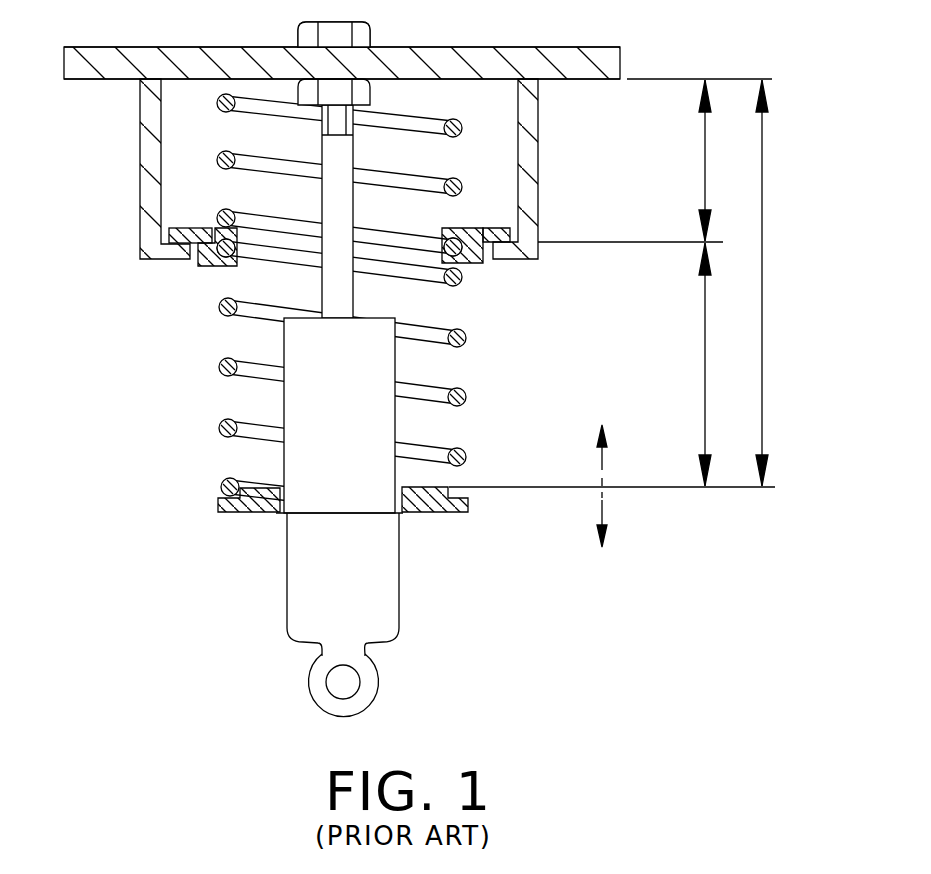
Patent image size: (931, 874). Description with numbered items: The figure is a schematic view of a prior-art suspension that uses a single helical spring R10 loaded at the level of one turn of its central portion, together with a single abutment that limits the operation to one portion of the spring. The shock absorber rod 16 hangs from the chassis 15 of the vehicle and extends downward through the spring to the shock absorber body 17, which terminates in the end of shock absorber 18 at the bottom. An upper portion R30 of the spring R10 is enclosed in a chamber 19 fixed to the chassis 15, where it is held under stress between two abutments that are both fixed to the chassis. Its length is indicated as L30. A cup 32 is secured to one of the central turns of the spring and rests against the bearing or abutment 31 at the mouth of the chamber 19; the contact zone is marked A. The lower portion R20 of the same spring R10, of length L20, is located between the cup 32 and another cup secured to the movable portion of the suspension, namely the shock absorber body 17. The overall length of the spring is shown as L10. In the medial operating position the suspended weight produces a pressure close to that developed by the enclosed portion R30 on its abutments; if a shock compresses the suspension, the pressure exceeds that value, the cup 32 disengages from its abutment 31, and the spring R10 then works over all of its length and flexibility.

The chassis 15 is at (109, 60).
The shock absorber rod 16 is at (343, 162).
The chamber 19 is at (462, 127).
The portion of spring R10 R30 is at (470, 187).
The cup 32 is at (184, 230).
The contact point A is at (160, 234).
The bearing or abutment 31 is at (166, 260).
The portion of spring R10 R20 is at (467, 338).
The spring R10 is at (252, 371).
The shock absorber body 17 is at (303, 555).
The end of shock absorber 18 is at (308, 690).
The length of spring R30 L30 is at (655, 160).
The length of spring R20 L20 is at (612, 365).
The length of spring R10 L10 is at (787, 283).